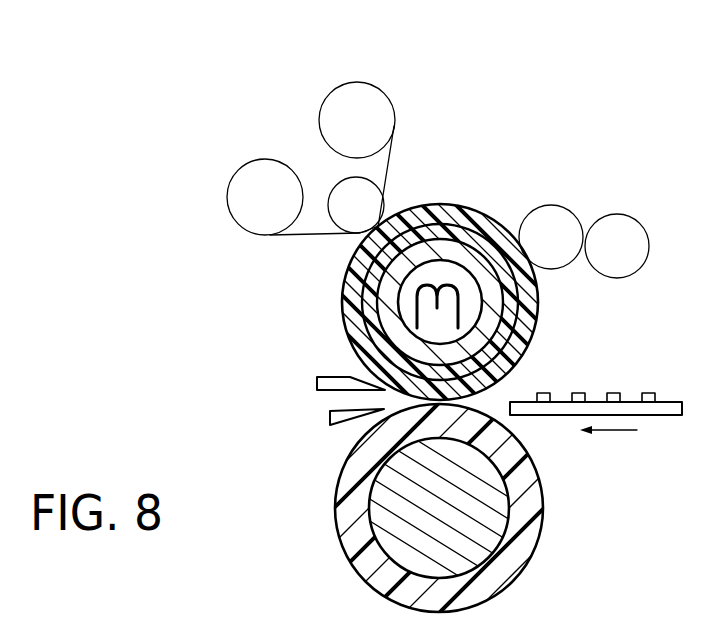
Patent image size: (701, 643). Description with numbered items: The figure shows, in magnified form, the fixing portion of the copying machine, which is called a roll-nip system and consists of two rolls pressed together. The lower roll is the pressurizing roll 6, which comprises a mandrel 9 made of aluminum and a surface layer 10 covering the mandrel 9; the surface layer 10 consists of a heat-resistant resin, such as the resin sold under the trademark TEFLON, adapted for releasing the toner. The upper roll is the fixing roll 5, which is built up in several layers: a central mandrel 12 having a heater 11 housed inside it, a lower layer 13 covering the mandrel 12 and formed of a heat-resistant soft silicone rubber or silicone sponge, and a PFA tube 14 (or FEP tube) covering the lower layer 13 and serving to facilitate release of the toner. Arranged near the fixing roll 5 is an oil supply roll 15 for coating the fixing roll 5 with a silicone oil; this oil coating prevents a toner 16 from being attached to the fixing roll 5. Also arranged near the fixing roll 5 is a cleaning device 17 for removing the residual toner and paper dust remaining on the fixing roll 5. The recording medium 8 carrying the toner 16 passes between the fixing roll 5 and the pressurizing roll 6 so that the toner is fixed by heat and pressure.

The fixing roll 5 is at (437, 278).
The pressurizing roll 6 is at (436, 445).
The recording sheet 8 is at (650, 415).
The mandrel 9 is at (478, 530).
The surface layer 10 is at (541, 498).
The heater 11 is at (518, 350).
The mandrel 12 is at (493, 296).
The lower layer 13 is at (490, 242).
The PFA tube 14 is at (447, 213).
The oil supply roll 15 is at (560, 220).
The toner 16 is at (612, 393).
The cleaning device 17 is at (405, 88).